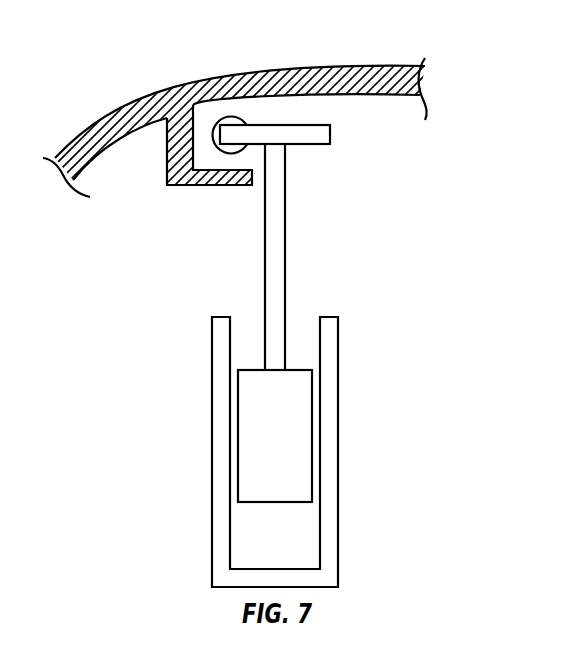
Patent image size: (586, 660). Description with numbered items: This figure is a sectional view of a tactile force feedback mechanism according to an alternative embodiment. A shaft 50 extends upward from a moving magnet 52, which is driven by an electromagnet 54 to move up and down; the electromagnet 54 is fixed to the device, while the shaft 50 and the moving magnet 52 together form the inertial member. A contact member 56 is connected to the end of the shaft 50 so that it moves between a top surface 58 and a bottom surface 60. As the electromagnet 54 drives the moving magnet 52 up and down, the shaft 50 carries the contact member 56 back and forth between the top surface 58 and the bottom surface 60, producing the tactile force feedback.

The top surface 58 is at (243, 70).
The bottom surface 60 is at (208, 187).
The contact member 56 is at (322, 125).
The shaft 50 is at (265, 273).
The electromagnet 54 is at (212, 345).
The moving magnet 52 is at (263, 419).